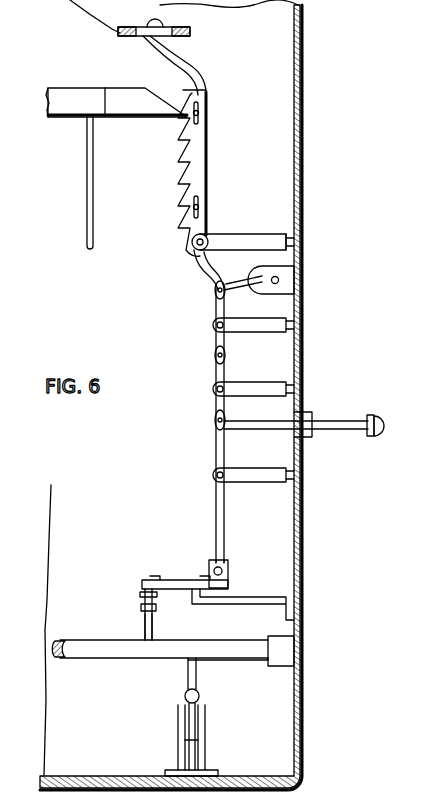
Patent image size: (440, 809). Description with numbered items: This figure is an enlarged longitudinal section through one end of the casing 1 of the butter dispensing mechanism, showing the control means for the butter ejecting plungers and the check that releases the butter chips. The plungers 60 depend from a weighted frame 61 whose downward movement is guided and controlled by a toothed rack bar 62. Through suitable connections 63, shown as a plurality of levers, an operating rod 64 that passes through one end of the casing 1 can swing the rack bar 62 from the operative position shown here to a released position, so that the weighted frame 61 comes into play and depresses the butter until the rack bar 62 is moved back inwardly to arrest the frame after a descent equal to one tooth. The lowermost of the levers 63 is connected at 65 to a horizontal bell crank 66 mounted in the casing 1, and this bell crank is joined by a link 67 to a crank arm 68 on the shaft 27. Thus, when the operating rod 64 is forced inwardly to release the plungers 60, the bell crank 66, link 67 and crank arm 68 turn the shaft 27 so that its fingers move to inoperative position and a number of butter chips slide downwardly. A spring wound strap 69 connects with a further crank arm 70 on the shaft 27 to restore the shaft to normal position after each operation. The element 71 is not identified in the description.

The casing 1 is at (303, 553).
The shaft 27 is at (155, 652).
The plungers 60 is at (93, 203).
The weighted frame 61 is at (165, 118).
The toothed rack bar 62 is at (207, 183).
The connections 63 is at (208, 365).
The operating rod 64 is at (339, 421).
The connection 65 is at (229, 572).
The horizontal bell crank 66 is at (172, 578).
The link 67 is at (145, 602).
The crank arm 68 is at (145, 632).
The spring wound strap 69 is at (206, 718).
The crank arm 70 is at (200, 680).
The bracket 71 is at (248, 278).